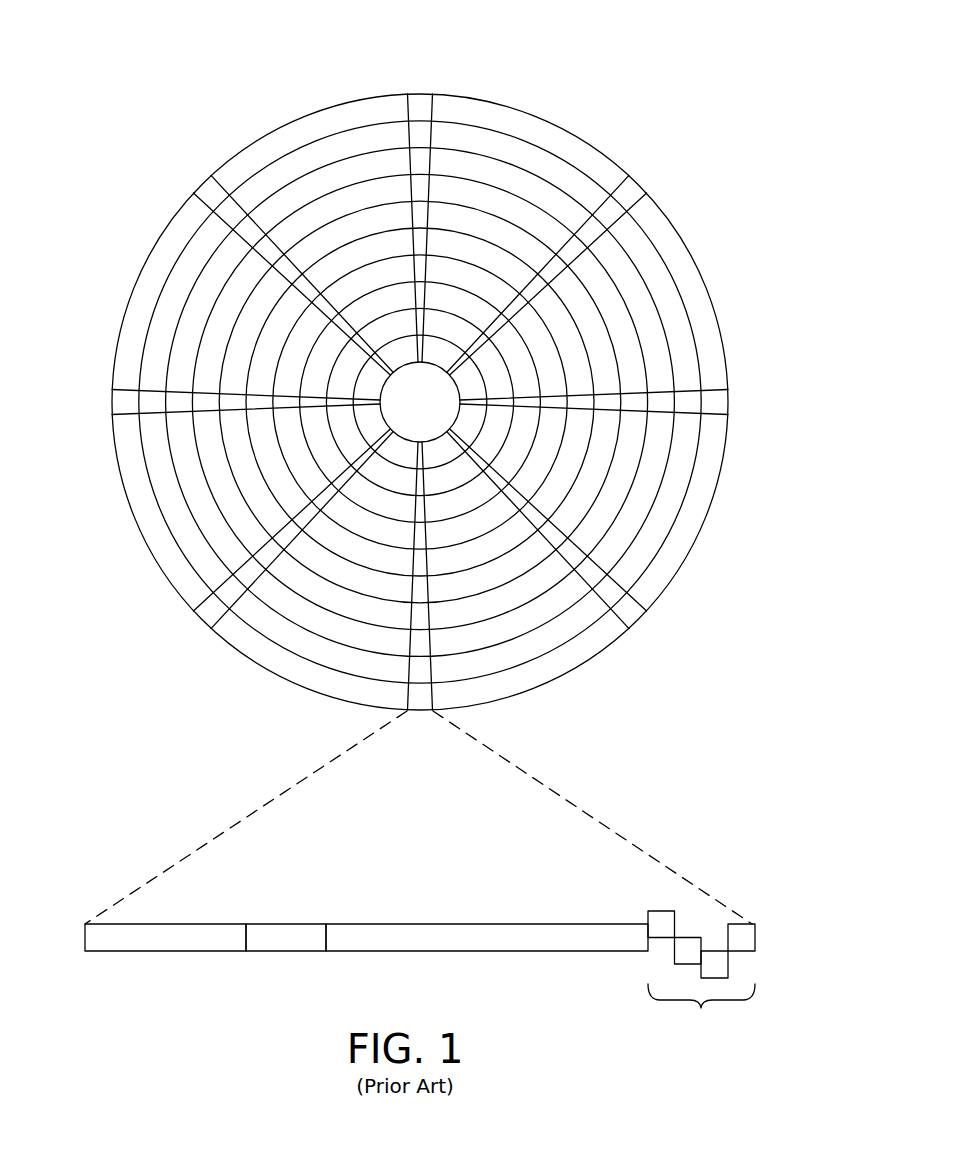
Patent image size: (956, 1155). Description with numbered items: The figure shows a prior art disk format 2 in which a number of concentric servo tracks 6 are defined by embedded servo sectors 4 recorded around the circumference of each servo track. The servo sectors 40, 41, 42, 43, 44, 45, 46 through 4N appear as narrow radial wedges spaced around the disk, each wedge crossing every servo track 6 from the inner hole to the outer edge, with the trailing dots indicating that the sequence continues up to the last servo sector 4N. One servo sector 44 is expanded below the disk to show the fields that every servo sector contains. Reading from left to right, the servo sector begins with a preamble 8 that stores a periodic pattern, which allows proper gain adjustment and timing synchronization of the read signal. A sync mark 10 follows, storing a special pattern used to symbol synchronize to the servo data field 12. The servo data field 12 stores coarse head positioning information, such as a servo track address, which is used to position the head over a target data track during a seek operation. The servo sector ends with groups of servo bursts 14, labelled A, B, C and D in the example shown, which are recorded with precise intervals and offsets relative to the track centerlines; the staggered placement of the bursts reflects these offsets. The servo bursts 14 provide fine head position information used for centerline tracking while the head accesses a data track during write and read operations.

The disk format 2 is at (195, 100).
The servo sectors 4 is at (419, 410).
The servo sector 40 is at (421, 103).
The servo sector 41 is at (630, 192).
The servo sector 42 is at (720, 403).
The servo sector 43 is at (630, 612).
The servo sector 44 is at (285, 780).
The servo sector 45 is at (207, 613).
The servo sector 46 is at (117, 400).
The servo sector 4N is at (208, 192).
The servo tracks 6 is at (525, 155).
The preamble 8 is at (146, 953).
The sync mark 10 is at (281, 953).
The servo data field 12 is at (473, 953).
The servo bursts 14 is at (637, 893).